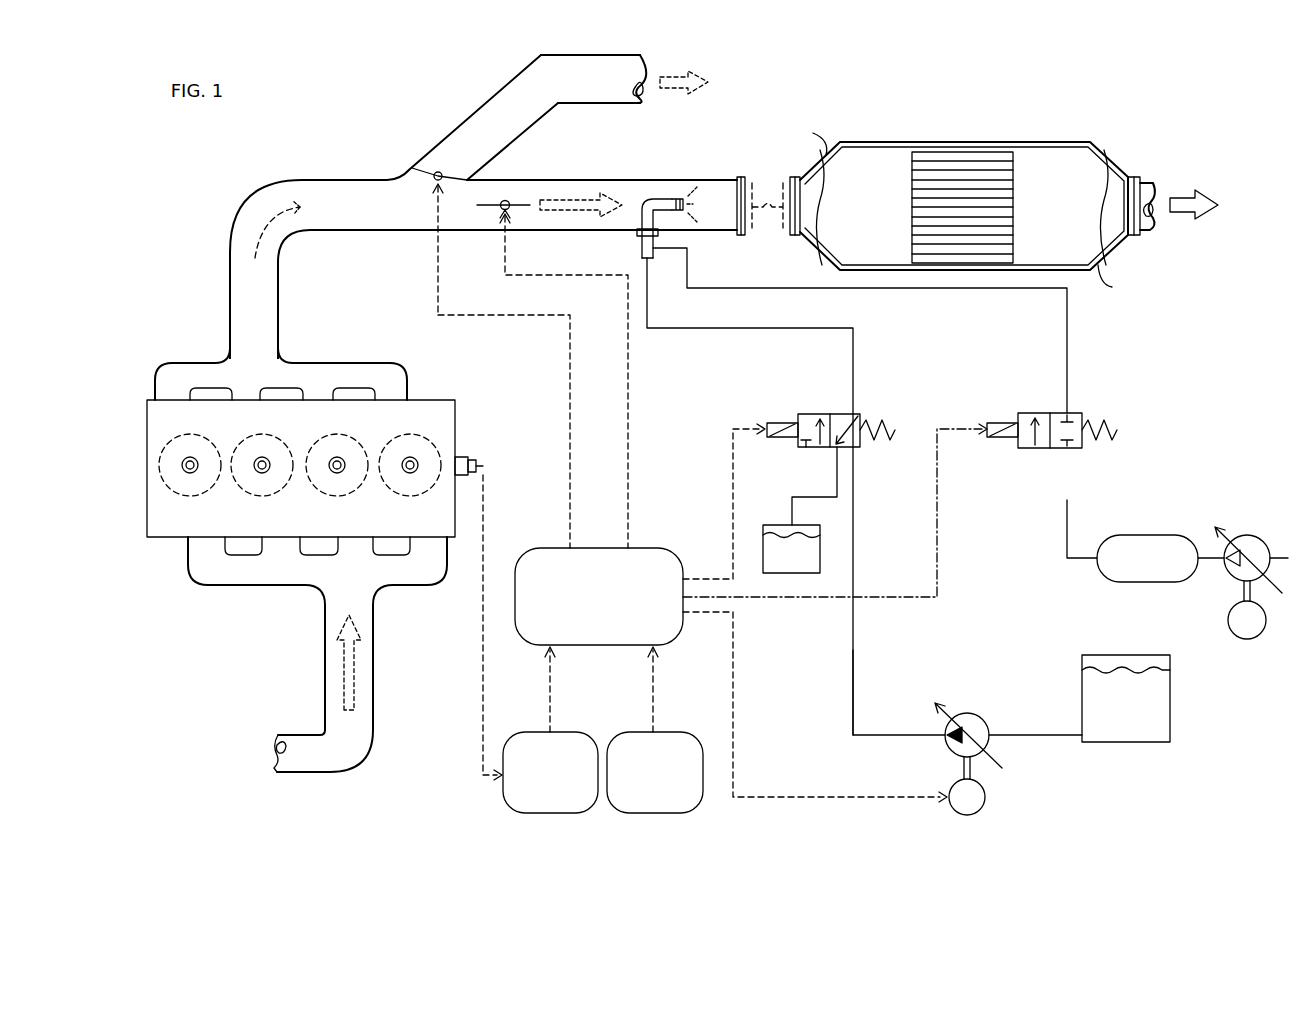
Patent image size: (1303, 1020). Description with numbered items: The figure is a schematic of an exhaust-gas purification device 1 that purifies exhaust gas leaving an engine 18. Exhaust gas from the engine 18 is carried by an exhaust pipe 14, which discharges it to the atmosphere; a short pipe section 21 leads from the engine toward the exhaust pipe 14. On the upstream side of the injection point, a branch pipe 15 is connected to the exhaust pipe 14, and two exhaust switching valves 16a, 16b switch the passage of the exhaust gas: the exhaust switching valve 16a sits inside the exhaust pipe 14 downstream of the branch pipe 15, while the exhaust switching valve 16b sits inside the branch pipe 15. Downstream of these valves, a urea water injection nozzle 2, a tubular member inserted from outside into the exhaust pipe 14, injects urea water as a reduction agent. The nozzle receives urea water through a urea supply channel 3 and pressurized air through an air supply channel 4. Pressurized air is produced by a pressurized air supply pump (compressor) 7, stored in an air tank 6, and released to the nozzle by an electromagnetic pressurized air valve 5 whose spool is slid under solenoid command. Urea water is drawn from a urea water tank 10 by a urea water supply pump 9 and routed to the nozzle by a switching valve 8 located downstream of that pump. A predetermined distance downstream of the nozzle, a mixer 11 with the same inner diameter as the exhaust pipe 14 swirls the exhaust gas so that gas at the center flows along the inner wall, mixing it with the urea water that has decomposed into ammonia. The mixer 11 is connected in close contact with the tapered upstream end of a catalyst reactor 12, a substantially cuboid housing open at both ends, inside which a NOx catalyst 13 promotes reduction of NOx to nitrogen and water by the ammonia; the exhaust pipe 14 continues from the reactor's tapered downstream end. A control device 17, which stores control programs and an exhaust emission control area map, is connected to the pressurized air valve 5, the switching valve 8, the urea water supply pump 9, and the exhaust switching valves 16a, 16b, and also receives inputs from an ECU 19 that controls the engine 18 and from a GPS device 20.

The exhaust-gas purification device 1 is at (1260, 105).
The urea water injection nozzle 2 is at (638, 250).
The urea supply channel 3 is at (834, 698).
The air supply channel 4 is at (1047, 556).
The pressurized air valve 5 is at (1040, 463).
The air tank 6 is at (1148, 585).
The pressurized air supply pump (compressor) 7 is at (1262, 545).
The switching valve 8 is at (816, 377).
The urea water supply pump 9 is at (968, 712).
The urea water tank 10 is at (802, 566).
The mixer 11 is at (763, 185).
The catalyst reactor 12 is at (873, 142).
The NOx catalyst 13 is at (962, 152).
The exhaust pipe 14 is at (322, 182).
The branch pipe 15 is at (472, 120).
The exhaust switching valve 16a is at (507, 203).
The exhaust switching valve 16b is at (432, 162).
The control device 17 is at (605, 645).
The engine 18 is at (435, 402).
The ECU 19 is at (531, 737).
The GPS device 20 is at (682, 737).
The exhaust manifold pipe 21 is at (230, 318).